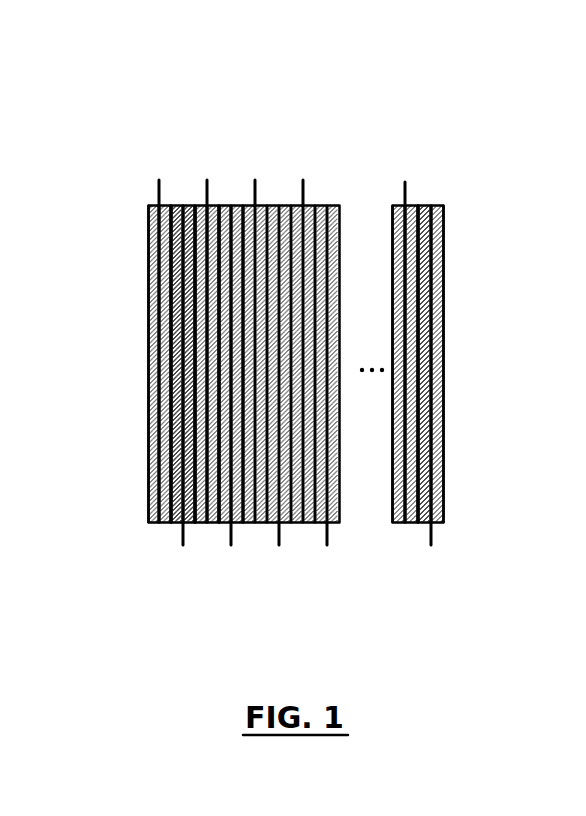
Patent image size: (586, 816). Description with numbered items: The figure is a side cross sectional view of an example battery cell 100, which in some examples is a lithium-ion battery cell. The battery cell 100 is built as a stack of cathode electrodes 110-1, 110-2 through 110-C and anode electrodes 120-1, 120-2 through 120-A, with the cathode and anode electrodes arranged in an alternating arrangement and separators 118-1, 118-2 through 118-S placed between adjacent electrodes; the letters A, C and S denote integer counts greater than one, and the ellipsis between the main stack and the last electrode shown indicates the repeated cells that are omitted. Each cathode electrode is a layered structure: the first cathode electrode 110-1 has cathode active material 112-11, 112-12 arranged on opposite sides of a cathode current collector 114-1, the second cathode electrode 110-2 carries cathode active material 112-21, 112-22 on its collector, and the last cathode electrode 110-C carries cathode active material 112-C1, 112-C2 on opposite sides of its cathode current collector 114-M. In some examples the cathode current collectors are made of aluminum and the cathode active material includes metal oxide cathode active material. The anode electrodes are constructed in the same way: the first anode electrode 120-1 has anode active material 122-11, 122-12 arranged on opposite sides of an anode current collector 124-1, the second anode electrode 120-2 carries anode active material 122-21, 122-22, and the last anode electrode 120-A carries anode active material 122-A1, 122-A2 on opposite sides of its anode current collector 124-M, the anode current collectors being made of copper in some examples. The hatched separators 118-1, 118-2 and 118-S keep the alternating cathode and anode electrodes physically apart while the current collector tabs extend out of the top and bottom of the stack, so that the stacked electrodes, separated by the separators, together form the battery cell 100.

The battery cell 100 is at (188, 80).
The cathode electrode 110-1 is at (138, 213).
The cathode electrode 110-2 is at (226, 122).
The cathode electrode 110-C is at (421, 122).
The cathode active material 112-11 is at (153, 205).
The cathode active material 112-12 is at (160, 247).
The cathode active material 112-21 is at (200, 205).
The cathode active material 112-22 is at (217, 205).
The cathode active material 112-C1 is at (402, 205).
The cathode active material 112-C2 is at (416, 205).
The cathode current collector 114-1 is at (158, 182).
The cathode current collector 114-M is at (410, 187).
The separator 118-1 is at (178, 312).
The separator 118-2 is at (195, 349).
The separator 118-S is at (437, 347).
The anode electrode 120-1 is at (183, 605).
The anode electrode 120-2 is at (240, 585).
The anode electrode 120-A is at (447, 537).
The anode active material 122-11 is at (178, 525).
The anode active material 122-12 is at (190, 525).
The anode active material 122-21 is at (227, 525).
The anode active material 122-22 is at (237, 525).
The anode active material 122-A1 is at (432, 545).
The anode active material 122-A2 is at (437, 525).
The anode current collector 124-1 is at (183, 545).
The anode current collector 124-M is at (428, 545).